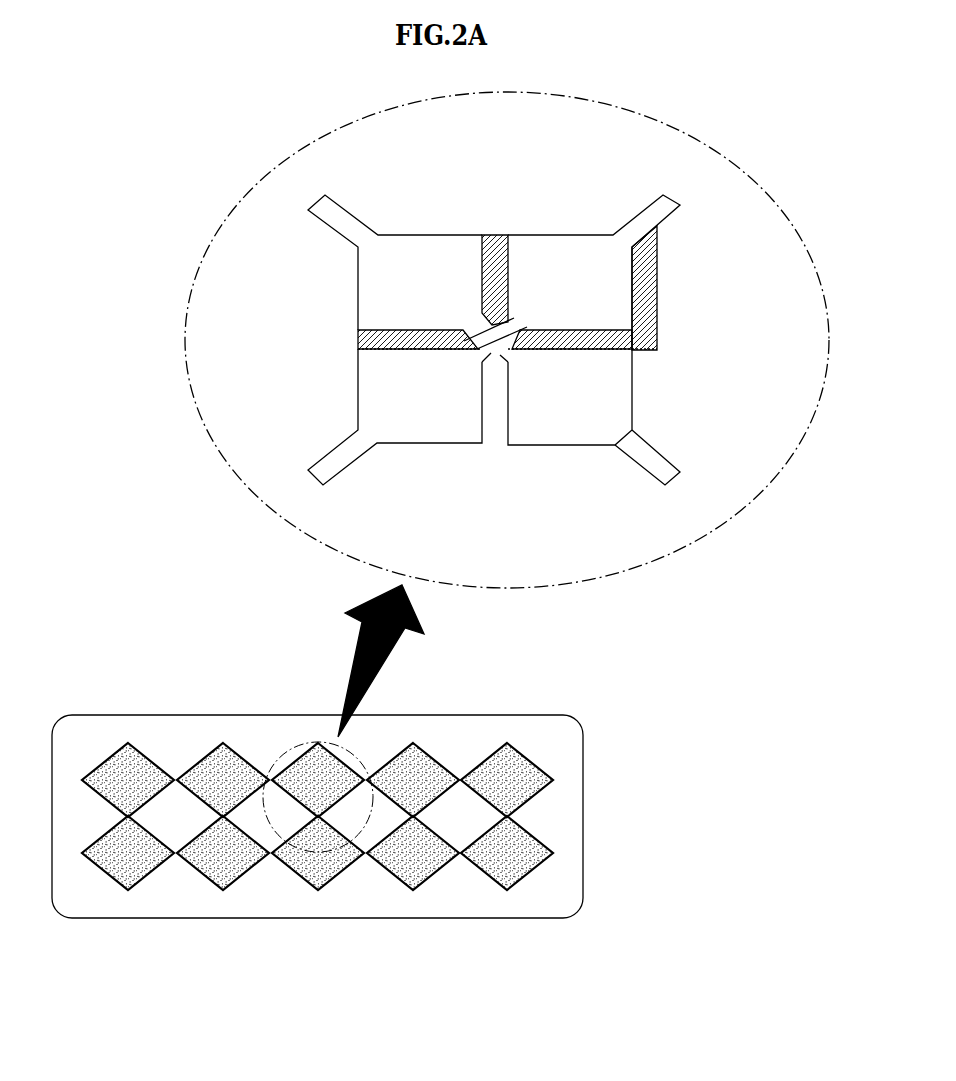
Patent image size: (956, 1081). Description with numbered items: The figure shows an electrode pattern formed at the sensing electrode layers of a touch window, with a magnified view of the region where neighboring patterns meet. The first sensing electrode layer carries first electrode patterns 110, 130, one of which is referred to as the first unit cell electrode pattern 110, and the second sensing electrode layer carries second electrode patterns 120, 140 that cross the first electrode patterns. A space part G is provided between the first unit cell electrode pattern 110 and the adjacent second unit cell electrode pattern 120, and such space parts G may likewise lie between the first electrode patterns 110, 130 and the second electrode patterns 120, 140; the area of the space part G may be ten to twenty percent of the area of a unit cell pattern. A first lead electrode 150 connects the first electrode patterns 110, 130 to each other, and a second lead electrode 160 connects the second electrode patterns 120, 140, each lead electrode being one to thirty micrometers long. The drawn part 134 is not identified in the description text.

The first unit cell electrode pattern 110 is at (568, 243).
The second unit cell electrode pattern 120 is at (413, 243).
The first electrode pattern 130 is at (368, 388).
The extension portion 134 is at (641, 466).
The second electrode pattern 140 is at (571, 447).
The first lead electrode 150 is at (500, 358).
The second lead electrode 160 is at (523, 323).
The space part G is at (490, 240).